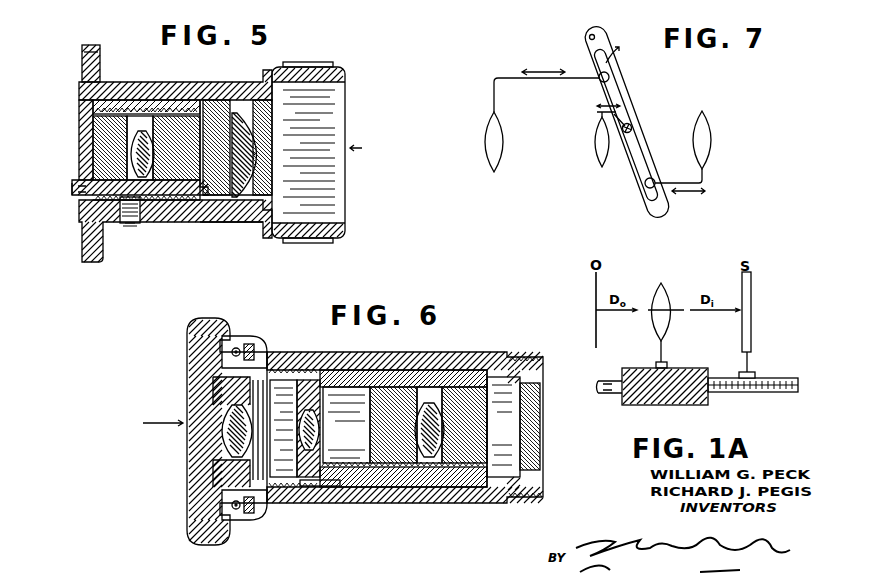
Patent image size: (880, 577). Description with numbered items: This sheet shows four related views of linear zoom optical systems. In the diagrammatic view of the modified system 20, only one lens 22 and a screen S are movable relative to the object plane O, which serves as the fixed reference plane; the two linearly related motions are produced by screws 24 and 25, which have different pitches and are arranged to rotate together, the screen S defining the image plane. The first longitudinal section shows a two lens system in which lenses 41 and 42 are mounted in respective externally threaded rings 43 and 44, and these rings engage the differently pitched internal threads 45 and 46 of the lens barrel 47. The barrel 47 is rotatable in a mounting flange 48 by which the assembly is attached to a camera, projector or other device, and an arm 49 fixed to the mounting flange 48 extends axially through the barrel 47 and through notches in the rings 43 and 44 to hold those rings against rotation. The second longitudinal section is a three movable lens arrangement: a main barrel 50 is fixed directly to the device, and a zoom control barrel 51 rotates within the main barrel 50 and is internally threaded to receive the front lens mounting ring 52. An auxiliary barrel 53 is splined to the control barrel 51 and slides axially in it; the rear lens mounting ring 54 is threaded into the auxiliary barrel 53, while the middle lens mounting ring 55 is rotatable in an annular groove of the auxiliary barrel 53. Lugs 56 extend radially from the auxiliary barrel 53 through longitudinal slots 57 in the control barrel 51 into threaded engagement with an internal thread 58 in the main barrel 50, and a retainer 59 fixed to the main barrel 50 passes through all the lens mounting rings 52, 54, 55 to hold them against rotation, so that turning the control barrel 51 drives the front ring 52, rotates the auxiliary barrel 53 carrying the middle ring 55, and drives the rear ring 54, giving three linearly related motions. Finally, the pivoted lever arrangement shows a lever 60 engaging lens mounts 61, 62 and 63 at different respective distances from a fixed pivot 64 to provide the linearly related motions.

In FIG. 5, the lens 41 is at (140, 153).
In FIG. 5, the lens 42 is at (247, 162).
In FIG. 5, the externally threaded ring 43 is at (145, 112).
In FIG. 5, the externally threaded ring 44 is at (240, 130).
In FIG. 5, the internal thread 45 is at (105, 138).
In FIG. 5, the internal thread 46 is at (268, 141).
In FIG. 5, the lens barrel 47 is at (251, 230).
In FIG. 5, the mounting flange 48 is at (92, 262).
In FIG. 5, the arm 49 is at (90, 176).
In FIG. 6, the main barrel 50 is at (493, 357).
In FIG. 6, the zoom control barrel 51 is at (190, 500).
In FIG. 6, the front lens mounting ring 52 is at (213, 393).
In FIG. 6, the auxiliary barrel 53 is at (356, 384).
In FIG. 6, the rear lens mounting ring 54 is at (426, 405).
In FIG. 6, the middle lens mounting ring 55 is at (370, 425).
In FIG. 6, the lugs 56 is at (298, 372).
In FIG. 6, the longitudinal slots 57 is at (276, 368).
In FIG. 6, the internal thread 58 is at (345, 490).
In FIG. 6, the retainer 59 is at (487, 466).
In FIG. 7, the lever 60 is at (630, 106).
In FIG. 7, the lens mount 61 is at (488, 132).
In FIG. 7, the lens mount 62 is at (596, 141).
In FIG. 7, the lens mount 63 is at (712, 136).
In FIG. 7, the fixed pivot 64 is at (589, 35).
In FIG. 1A, the system 20 is at (683, 276).
In FIG. 1A, the lens 22 is at (659, 284).
In FIG. 1A, the screw 24 is at (653, 406).
In FIG. 1A, the screw 25 is at (745, 391).